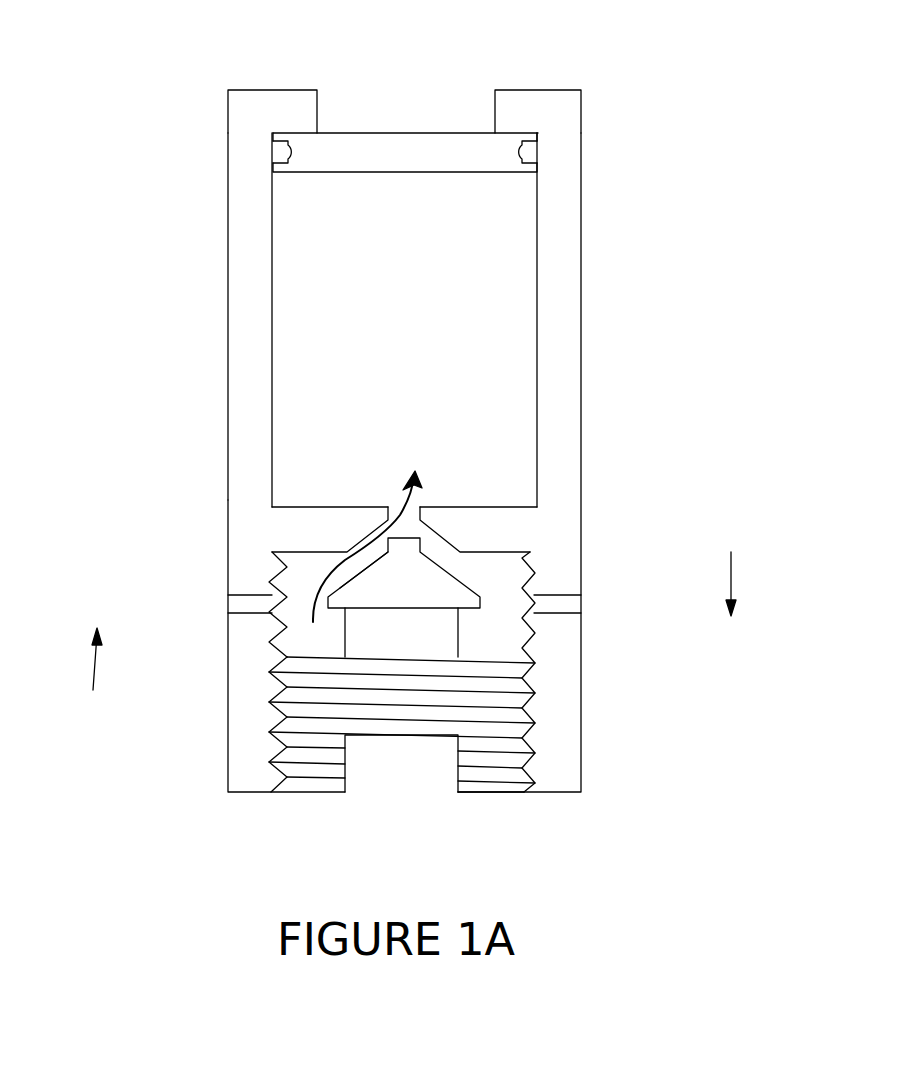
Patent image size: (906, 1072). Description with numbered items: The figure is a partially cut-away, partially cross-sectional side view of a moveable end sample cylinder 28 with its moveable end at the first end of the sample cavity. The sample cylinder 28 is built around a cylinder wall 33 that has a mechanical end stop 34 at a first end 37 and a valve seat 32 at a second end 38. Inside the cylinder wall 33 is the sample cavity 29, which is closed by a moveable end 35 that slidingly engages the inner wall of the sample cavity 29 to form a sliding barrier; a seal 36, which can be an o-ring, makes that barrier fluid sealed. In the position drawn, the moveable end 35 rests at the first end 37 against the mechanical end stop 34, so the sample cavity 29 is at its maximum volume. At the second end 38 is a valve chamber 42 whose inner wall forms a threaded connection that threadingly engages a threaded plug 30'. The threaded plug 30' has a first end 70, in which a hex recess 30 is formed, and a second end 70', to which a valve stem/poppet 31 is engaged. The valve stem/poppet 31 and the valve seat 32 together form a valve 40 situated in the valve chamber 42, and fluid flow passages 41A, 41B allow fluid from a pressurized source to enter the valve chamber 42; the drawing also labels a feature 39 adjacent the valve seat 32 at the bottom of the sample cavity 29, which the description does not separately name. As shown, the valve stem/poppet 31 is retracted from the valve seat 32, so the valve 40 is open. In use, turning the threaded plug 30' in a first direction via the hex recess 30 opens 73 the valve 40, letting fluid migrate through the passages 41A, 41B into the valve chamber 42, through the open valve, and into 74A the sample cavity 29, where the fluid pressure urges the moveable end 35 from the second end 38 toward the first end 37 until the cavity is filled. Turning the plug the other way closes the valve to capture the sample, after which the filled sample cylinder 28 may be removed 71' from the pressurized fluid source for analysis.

The sample cylinder 28 is at (607, 248).
The sample cavity 29 is at (485, 412).
The hex recess 30 is at (483, 766).
The threaded plug 30' is at (483, 720).
The valve stem/poppet 31 is at (477, 595).
The valve seat 32 is at (433, 530).
The cylinder wall 33 is at (228, 320).
The mechanical end stop 34 is at (317, 133).
The moveable end 35 is at (500, 145).
The seal 36 is at (273, 148).
The first end 37 is at (222, 92).
The second end 38 is at (220, 538).
The shoulder 39 is at (458, 505).
The valve 40 is at (400, 510).
The fluid flow passage 41A is at (233, 608).
The fluid flow passage 41B is at (575, 597).
The valve chamber 42 is at (510, 640).
The first end of threaded plug 70 is at (555, 780).
The second end of threaded plug 70' is at (212, 619).
The removal direction 71' is at (769, 584).
The valve opening direction 73 is at (92, 668).
The fluid flow into sample cavity 74A is at (345, 568).